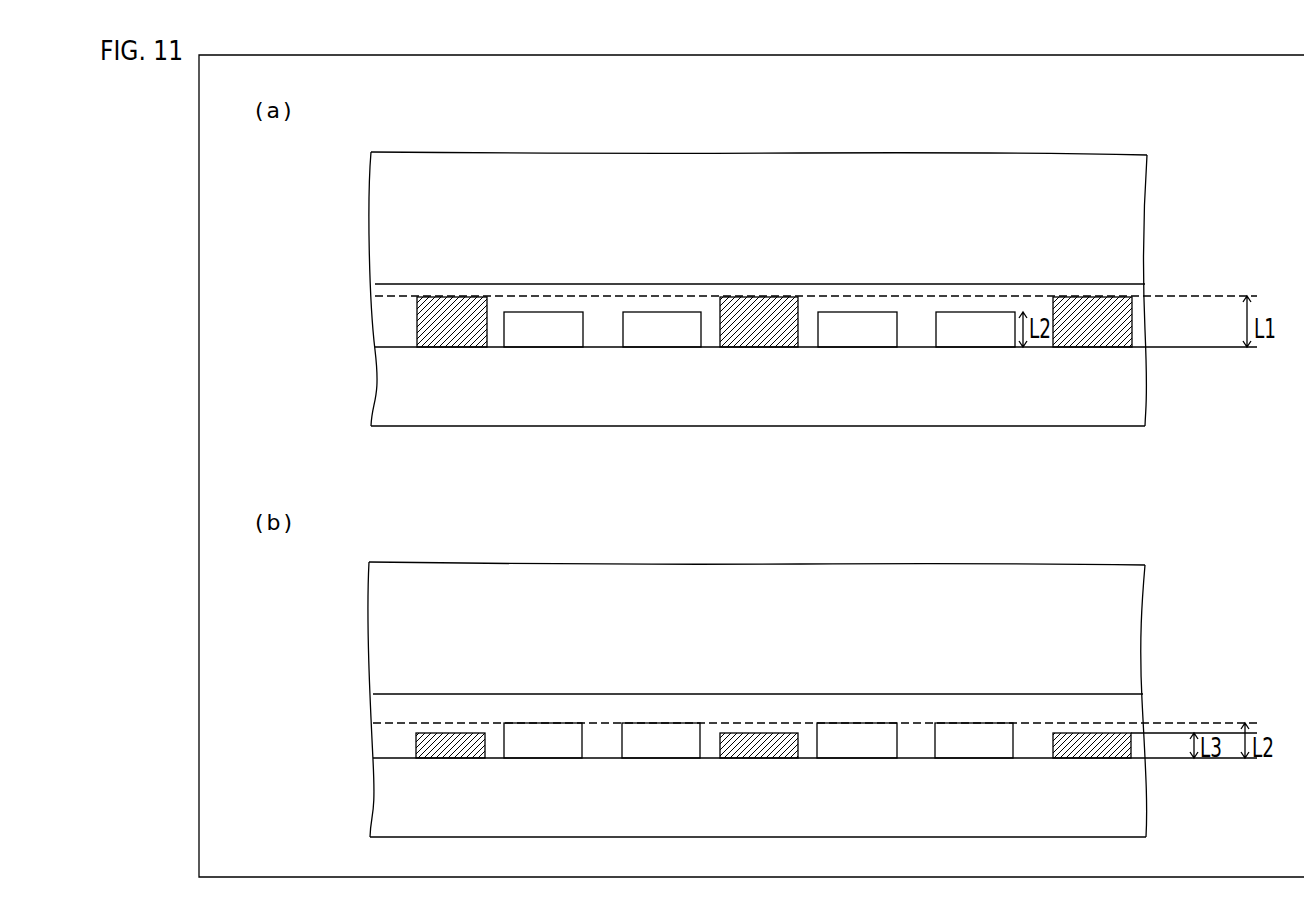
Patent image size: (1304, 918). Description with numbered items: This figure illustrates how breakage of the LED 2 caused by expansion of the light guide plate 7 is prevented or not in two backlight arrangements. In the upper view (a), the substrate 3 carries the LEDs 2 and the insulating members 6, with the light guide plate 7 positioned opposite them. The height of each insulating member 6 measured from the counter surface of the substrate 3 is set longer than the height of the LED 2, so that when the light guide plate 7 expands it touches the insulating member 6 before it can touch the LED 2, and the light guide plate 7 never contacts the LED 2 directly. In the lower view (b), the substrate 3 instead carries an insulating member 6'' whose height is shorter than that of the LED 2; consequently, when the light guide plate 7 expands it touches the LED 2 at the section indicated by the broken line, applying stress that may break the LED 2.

The LED 2 is at (543, 318).
The substrate 3 is at (383, 385).
The insulating member 6 is at (774, 222).
The insulating member 6'' is at (773, 634).
The light guide plate 7 is at (382, 220).